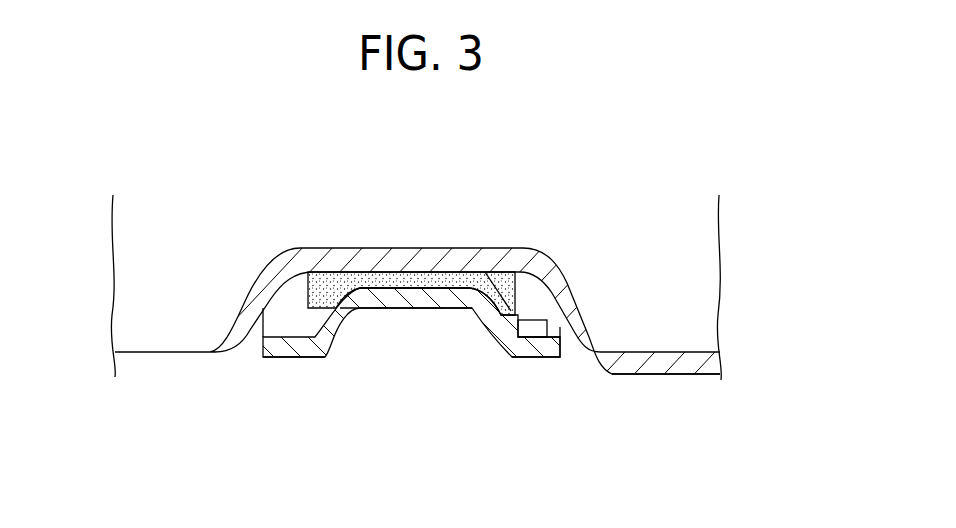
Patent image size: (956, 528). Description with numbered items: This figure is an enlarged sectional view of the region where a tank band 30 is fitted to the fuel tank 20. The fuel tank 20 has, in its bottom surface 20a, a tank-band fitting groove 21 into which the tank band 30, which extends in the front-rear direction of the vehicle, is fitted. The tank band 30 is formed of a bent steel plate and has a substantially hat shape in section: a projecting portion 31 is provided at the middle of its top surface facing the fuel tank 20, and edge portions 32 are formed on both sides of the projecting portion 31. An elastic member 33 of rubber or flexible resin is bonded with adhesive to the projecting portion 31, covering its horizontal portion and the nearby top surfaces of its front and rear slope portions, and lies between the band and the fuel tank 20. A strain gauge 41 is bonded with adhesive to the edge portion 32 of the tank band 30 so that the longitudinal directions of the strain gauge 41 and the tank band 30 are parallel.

The fuel tank 20 is at (683, 385).
The bottom surface 20a is at (630, 377).
The tank-band fitting groove 21 is at (275, 359).
The tank band 30 is at (301, 369).
The projecting portion 31 is at (402, 310).
The edge portion 32 is at (530, 358).
The elastic member 33 is at (436, 280).
The strain gauge 41 is at (533, 327).